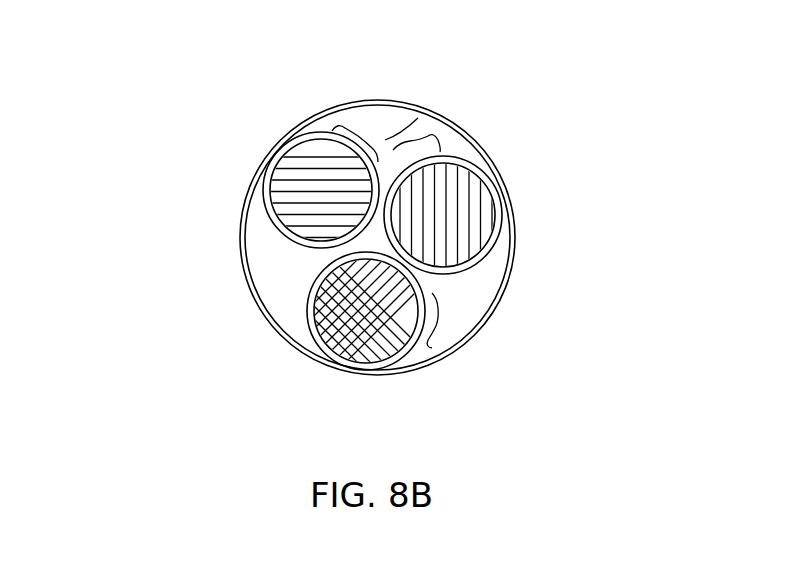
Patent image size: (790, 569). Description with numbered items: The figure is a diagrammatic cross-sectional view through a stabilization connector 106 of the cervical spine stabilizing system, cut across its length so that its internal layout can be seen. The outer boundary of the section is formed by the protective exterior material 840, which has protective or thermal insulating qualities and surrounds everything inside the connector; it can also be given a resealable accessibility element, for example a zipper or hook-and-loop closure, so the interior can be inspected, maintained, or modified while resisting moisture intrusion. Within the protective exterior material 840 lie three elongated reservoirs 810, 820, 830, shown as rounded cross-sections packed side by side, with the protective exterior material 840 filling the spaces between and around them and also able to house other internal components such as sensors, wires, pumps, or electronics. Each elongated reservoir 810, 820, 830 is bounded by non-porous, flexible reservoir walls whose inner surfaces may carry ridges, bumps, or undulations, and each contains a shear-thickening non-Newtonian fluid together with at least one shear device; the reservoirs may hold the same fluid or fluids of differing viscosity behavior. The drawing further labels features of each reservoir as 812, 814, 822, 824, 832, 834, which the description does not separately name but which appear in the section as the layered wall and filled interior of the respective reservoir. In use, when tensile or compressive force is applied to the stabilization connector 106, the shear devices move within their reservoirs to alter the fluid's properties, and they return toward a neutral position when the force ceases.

The stabilization connector 106 is at (272, 108).
The elongated reservoir 810 is at (350, 125).
The first conductor insulation 812 is at (266, 236).
The first conductor 814 is at (306, 185).
The elongated reservoir 820 is at (418, 118).
The second conductor insulation 822 is at (492, 253).
The second conductor 824 is at (457, 192).
The elongated reservoir 830 is at (436, 323).
The third conductor insulation layer 832 is at (312, 334).
The third conductor 834 is at (366, 337).
The protective exterior material 840 is at (407, 140).